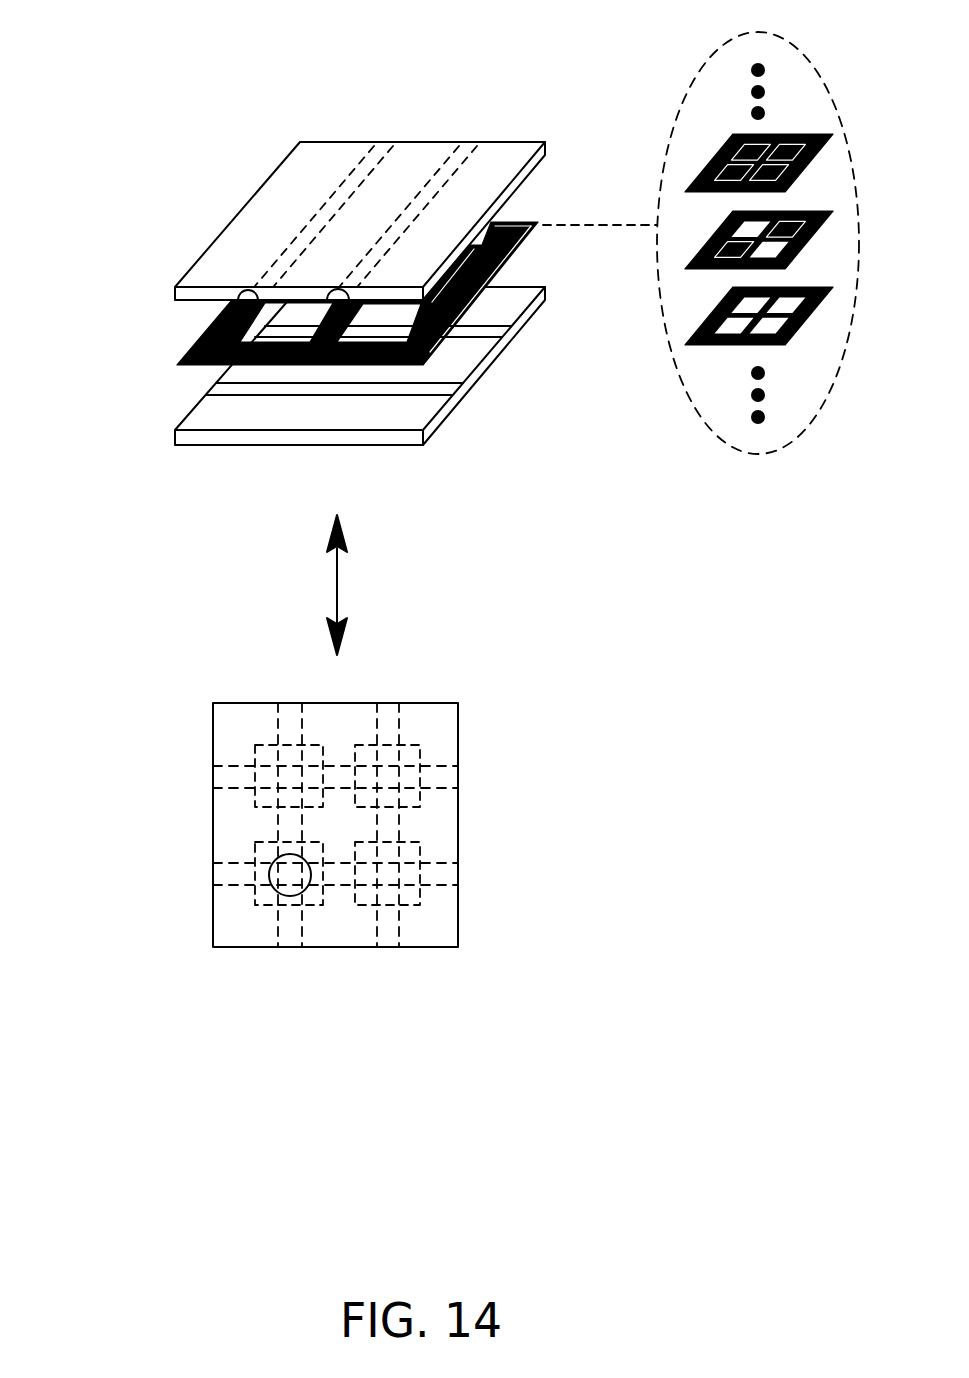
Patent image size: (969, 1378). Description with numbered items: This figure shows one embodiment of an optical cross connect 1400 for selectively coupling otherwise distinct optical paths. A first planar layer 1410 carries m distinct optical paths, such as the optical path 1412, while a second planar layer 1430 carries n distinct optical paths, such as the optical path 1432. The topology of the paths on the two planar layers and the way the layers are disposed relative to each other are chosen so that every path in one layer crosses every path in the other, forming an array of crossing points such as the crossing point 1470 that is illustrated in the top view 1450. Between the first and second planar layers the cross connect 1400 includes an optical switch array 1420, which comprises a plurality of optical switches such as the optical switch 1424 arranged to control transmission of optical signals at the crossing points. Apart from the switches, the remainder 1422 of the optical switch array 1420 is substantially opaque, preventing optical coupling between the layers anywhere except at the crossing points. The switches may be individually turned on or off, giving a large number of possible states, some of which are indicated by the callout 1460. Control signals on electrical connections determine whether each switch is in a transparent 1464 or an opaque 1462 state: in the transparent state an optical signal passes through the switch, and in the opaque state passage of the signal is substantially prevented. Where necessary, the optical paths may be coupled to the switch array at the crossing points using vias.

The optical cross connect 1400 is at (202, 173).
The first planar layer 1410 is at (160, 291).
The optical path 1412 is at (462, 153).
The optical switch array 1420 is at (160, 360).
The remainder of layer 1422 is at (523, 223).
The optical switch 1424 is at (443, 315).
The second planar layer 1430 is at (162, 435).
The optical path 1432 is at (445, 387).
The top view 1450 is at (182, 680).
The callout 1460 is at (724, 235).
The opaque state 1462 is at (792, 221).
The transparent state 1464 is at (772, 256).
The crossing point 1470 is at (272, 858).